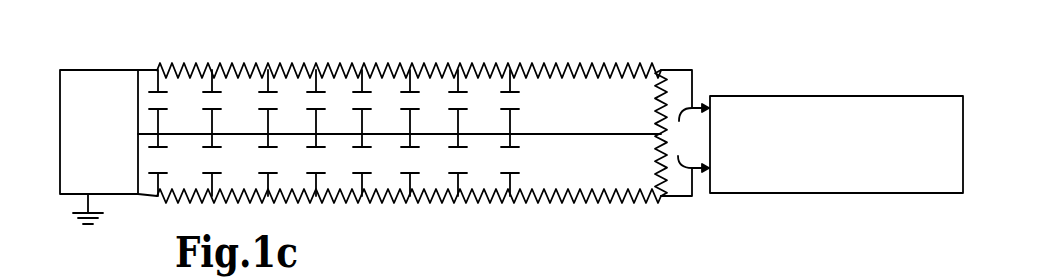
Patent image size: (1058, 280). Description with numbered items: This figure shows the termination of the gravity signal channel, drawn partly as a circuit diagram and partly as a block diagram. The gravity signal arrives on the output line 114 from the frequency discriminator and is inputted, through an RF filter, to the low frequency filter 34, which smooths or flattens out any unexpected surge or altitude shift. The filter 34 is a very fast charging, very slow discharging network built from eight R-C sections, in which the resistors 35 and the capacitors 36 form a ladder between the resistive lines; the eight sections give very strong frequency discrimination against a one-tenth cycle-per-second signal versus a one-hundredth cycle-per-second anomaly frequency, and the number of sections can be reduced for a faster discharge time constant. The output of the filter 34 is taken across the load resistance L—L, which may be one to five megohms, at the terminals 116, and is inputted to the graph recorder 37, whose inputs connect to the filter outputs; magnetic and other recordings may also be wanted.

The output line 114 is at (50, 70).
The low frequency filter 34 is at (293, 62).
The resistors 35 is at (450, 60).
The capacitors 36 is at (532, 110).
The inductive output coupling 116 is at (670, 133).
The graph recorder 37 is at (808, 96).